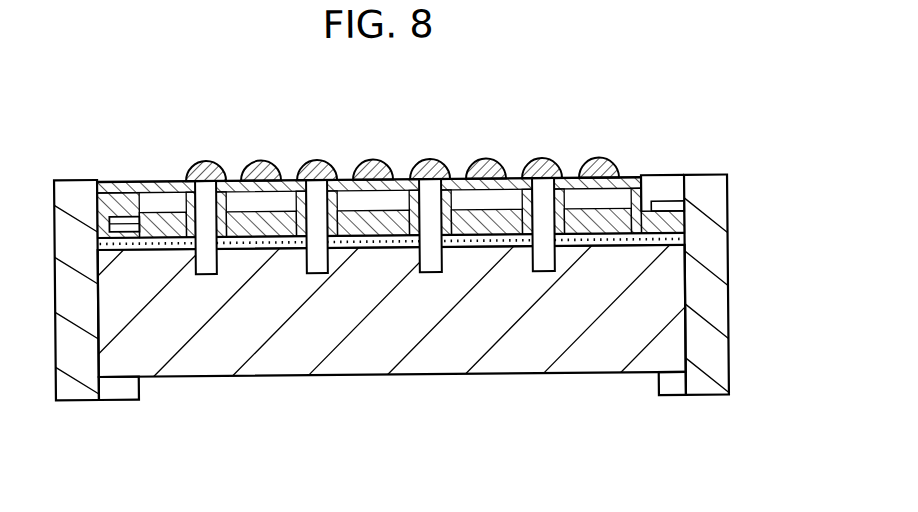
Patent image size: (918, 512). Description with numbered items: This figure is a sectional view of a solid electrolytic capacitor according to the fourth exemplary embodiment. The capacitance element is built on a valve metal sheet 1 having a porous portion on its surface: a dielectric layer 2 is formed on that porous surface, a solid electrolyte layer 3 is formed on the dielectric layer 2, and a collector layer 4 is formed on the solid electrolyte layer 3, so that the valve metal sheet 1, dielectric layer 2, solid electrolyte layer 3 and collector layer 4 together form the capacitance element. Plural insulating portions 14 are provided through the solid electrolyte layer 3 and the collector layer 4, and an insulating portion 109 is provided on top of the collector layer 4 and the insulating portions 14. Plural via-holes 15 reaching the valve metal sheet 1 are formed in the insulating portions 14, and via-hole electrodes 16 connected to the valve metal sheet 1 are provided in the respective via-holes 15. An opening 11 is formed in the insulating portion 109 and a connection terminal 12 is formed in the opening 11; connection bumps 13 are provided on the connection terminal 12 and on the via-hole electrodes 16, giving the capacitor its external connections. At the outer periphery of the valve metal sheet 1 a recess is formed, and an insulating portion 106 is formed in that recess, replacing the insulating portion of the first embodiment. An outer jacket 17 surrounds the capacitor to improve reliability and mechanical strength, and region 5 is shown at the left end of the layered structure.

The valve metal sheet 1 is at (668, 313).
The dielectric layer 2 is at (670, 247).
The solid electrolyte layer 3 is at (652, 217).
The collector layer 4 is at (603, 204).
The side wiring block 5 is at (112, 195).
The opening 11 is at (270, 179).
The connection terminal 12 is at (370, 162).
The connection bump 13 is at (428, 168).
The insulating portion 14 is at (457, 188).
The via-hole 15 is at (548, 182).
The via-hole electrode 16 is at (318, 184).
The outer jacket 17 is at (700, 388).
The insulating portion 106 is at (118, 228).
The insulating portion 109 is at (172, 193).